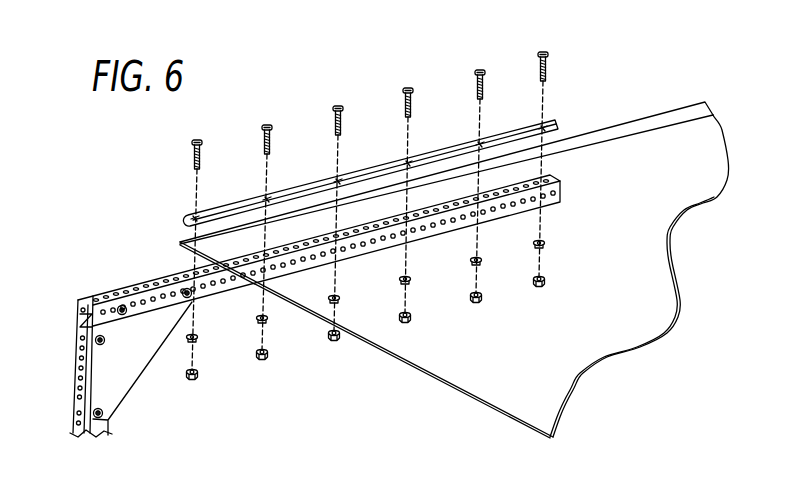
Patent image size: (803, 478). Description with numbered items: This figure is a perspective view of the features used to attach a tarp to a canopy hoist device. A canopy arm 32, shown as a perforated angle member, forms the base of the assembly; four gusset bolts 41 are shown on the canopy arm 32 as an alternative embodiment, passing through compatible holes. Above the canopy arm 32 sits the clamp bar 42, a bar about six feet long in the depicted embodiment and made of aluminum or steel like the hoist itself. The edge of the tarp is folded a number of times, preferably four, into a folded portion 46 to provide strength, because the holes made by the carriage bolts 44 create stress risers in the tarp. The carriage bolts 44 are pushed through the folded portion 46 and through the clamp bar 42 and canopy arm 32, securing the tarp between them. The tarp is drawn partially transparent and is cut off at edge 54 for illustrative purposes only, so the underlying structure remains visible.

The canopy arm 32 is at (126, 287).
The gusset bolts 41 is at (119, 306).
The clamp bar 42 is at (556, 124).
The carriage bolts 44 is at (198, 138).
The folded portion 46 is at (700, 112).
The edge 54 is at (522, 397).